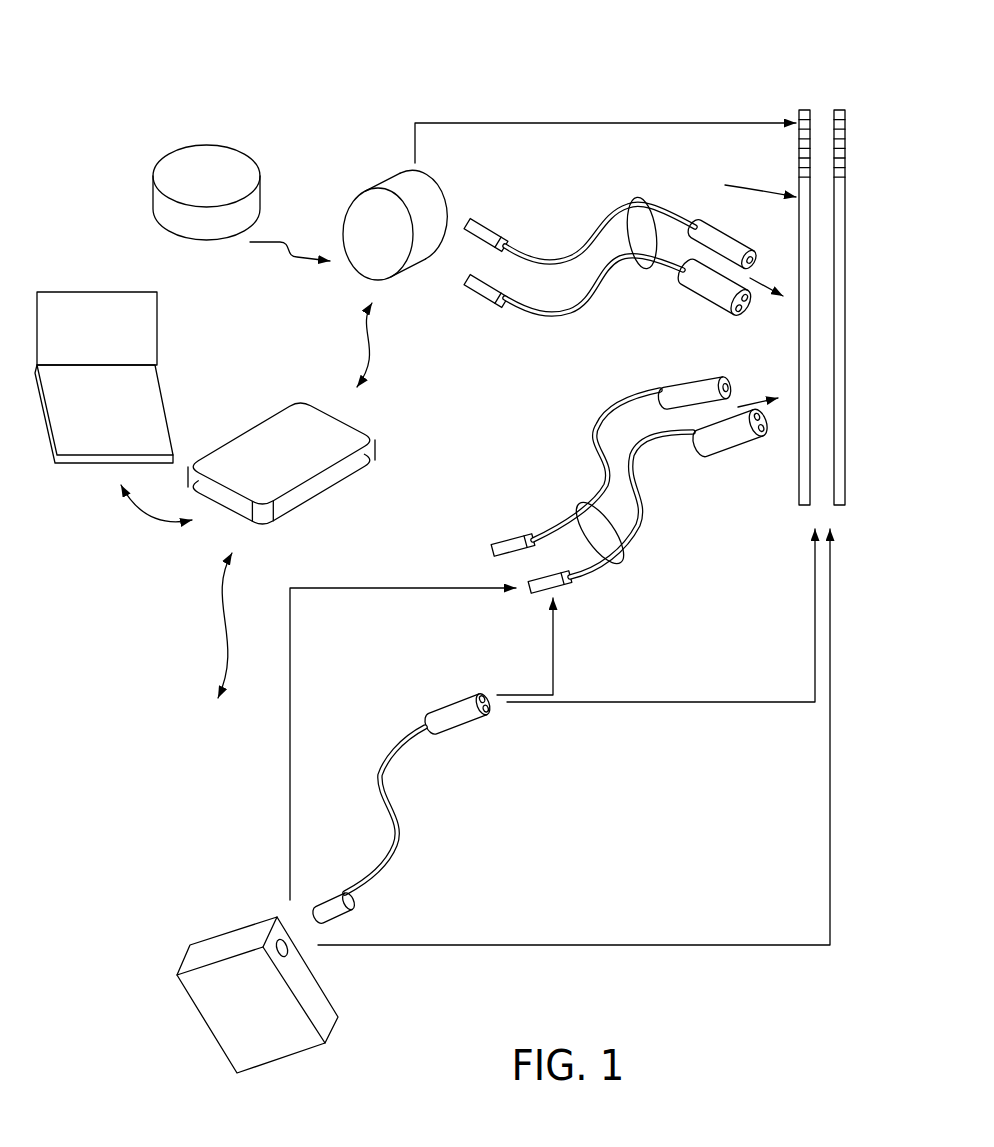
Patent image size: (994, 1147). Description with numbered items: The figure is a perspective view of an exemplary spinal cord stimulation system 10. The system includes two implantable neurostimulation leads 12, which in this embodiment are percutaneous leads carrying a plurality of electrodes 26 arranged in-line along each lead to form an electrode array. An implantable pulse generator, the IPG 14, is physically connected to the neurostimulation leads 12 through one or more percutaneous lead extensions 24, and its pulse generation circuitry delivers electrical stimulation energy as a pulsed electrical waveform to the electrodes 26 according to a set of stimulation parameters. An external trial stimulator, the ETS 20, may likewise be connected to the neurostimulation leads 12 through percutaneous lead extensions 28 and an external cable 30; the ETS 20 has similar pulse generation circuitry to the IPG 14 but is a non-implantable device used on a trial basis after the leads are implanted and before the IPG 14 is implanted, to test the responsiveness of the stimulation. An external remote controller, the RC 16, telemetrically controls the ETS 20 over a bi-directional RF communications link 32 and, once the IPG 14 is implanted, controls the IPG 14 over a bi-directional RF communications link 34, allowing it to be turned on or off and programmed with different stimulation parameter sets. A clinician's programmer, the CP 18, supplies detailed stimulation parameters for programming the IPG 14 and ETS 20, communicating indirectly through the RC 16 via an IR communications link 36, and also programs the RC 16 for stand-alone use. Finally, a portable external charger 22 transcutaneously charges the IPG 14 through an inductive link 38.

The SCS system 10 is at (579, 70).
The implantable neurostimulation leads 12 is at (823, 106).
The implantable pulse generator (IPG) 14 is at (373, 178).
The external remote controller (RC) 16 is at (293, 418).
The clinician's programmer (CP) 18 is at (80, 307).
The external trial stimulator (ETS) 20 is at (228, 945).
The external charger 22 is at (205, 158).
The percutaneous lead extensions 24 is at (637, 197).
The electrodes 26 is at (845, 180).
The percutaneous lead extensions 28 is at (578, 512).
The external cable 30 is at (398, 742).
The bi-directional RF communications link 32 is at (227, 674).
The bi-directional RF communications link 34 is at (373, 360).
The IR communications link 36 is at (148, 514).
The inductive link 38 is at (267, 244).